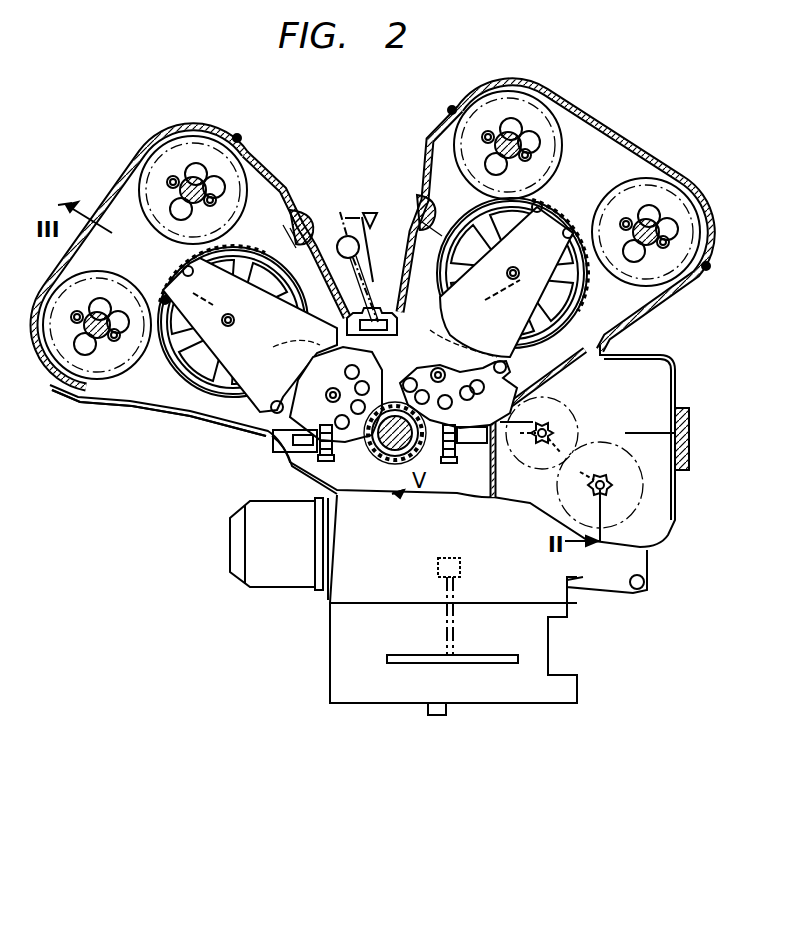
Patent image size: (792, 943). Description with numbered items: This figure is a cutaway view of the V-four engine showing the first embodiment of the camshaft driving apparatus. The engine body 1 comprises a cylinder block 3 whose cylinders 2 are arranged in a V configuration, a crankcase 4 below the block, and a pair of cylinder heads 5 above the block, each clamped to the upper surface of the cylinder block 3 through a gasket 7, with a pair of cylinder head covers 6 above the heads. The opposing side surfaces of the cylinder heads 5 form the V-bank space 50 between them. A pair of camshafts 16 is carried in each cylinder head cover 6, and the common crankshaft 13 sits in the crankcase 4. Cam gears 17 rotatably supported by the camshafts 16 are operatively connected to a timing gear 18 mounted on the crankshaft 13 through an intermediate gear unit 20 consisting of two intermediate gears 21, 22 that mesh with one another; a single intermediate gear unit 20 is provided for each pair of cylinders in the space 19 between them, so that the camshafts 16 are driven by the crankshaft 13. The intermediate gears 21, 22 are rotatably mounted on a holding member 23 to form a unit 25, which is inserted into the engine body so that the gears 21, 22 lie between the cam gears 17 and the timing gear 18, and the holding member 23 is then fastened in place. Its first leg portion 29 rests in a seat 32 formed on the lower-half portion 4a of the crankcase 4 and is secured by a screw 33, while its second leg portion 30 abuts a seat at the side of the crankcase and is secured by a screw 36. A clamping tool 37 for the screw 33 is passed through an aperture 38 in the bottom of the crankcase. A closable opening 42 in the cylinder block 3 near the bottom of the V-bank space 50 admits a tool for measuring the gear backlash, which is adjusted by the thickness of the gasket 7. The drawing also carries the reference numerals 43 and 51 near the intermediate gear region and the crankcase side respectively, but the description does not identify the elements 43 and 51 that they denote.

The engine body 1 is at (210, 118).
The cylinder 2 is at (216, 430).
The cylinder block 3 is at (410, 258).
The crankcase 4 is at (678, 496).
The lower-half portion of the crankcase 4a is at (293, 462).
The cylinder head 5 is at (272, 160).
The cylinder head cover 6 is at (136, 168).
The gasket 7 is at (306, 226).
The crankshaft 13 is at (393, 452).
The camshaft 16 is at (184, 182).
The cam gear 17 is at (235, 185).
The timing gear 18 is at (372, 445).
The space 19 is at (332, 313).
The intermediate gear unit 20 is at (240, 428).
The intermediate gear 21 is at (332, 444).
The intermediate gear 22 is at (247, 262).
The holding member 23 is at (198, 396).
The unit 25 is at (160, 384).
The first leg portion 29 is at (270, 436).
The second leg portion 30 is at (417, 313).
The seat 32 is at (318, 446).
The screw 33 is at (328, 462).
The screw 36 is at (400, 372).
The clamping tool 37 is at (446, 626).
The aperture 38 is at (453, 462).
The closable opening 42 is at (376, 330).
The pivot 43 is at (345, 237).
The V-bank space 50 is at (362, 193).
The pump gear 51 is at (560, 428).